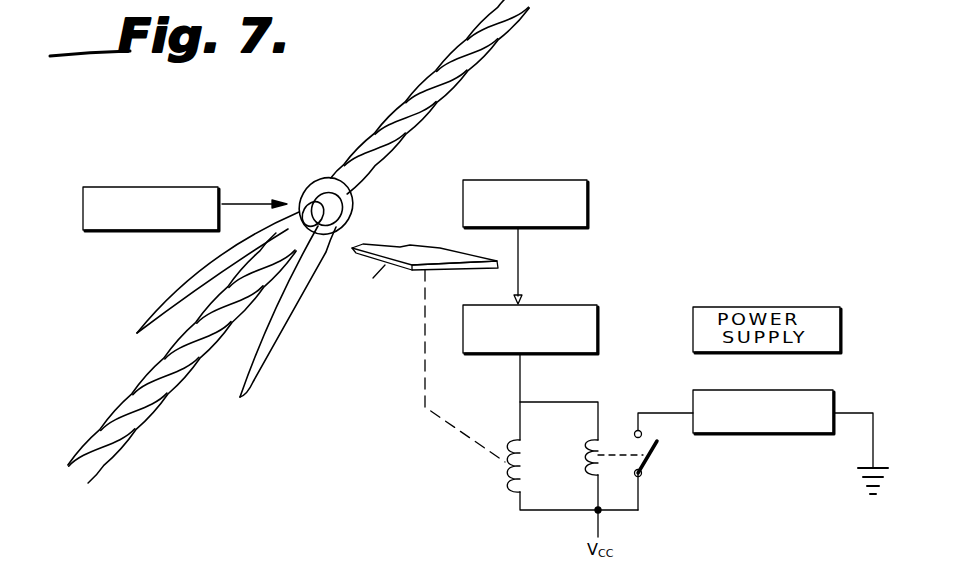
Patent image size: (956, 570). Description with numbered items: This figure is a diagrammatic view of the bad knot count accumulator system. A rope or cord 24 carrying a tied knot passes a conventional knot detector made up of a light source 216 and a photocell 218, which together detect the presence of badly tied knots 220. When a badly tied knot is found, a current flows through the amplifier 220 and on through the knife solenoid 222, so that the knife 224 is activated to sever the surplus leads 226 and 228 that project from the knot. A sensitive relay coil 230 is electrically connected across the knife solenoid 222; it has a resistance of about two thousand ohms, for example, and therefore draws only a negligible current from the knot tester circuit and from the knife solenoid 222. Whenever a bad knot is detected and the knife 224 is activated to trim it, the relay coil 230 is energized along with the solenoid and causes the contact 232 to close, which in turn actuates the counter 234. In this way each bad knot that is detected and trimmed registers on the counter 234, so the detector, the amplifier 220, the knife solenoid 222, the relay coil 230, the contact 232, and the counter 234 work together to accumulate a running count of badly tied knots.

The rope 24 is at (480, 66).
The light source 216 is at (205, 190).
The photocell 218 is at (588, 200).
The amplifier 220 is at (313, 208).
The knife solenoid 222 is at (507, 473).
The knife 224 is at (450, 273).
The surplus lead 226 is at (258, 373).
The surplus lead 228 is at (172, 292).
The sensitive relay coil 230 is at (585, 470).
The contact 232 is at (657, 450).
The counter 234 is at (785, 438).